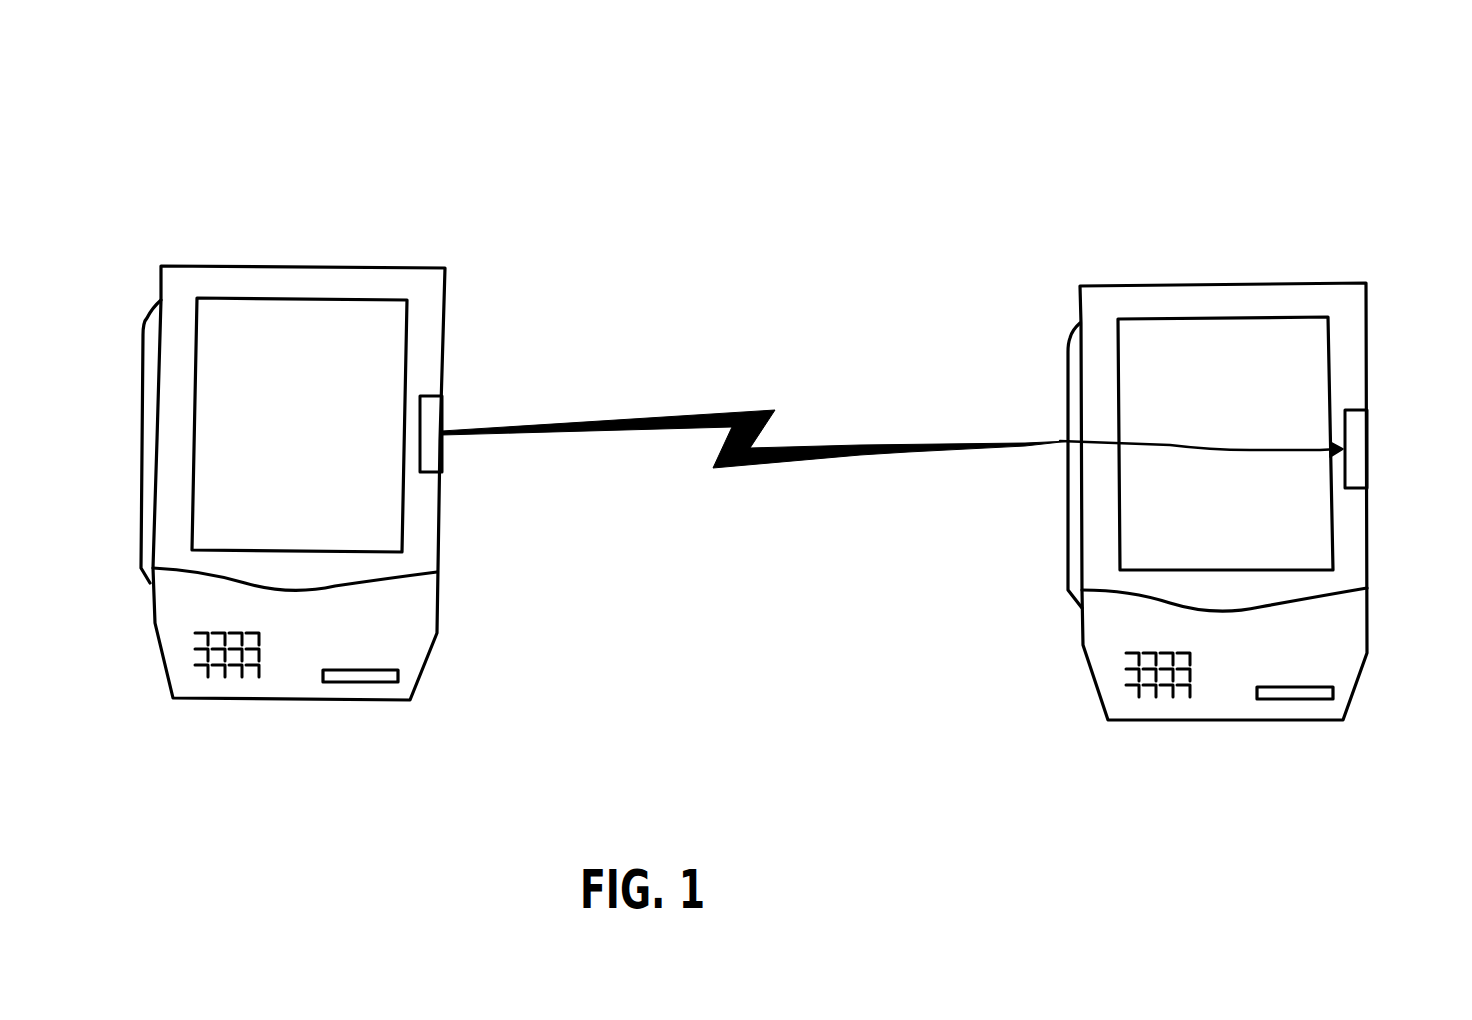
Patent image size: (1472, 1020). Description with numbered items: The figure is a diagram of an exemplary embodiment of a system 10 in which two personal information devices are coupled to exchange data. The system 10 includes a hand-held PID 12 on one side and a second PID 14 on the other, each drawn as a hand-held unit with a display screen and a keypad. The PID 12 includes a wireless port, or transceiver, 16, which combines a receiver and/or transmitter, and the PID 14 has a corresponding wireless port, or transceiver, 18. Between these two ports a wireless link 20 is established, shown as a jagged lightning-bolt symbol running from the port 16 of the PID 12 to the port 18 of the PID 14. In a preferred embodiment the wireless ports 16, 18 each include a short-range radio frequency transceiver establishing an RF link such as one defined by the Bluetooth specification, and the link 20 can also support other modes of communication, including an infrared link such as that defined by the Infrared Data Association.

The system 10 is at (782, 63).
The hand-held PID 12 is at (295, 265).
The PID 14 is at (1215, 282).
The wireless port 16 is at (442, 396).
The wireless port 18 is at (1366, 408).
The wireless link 20 is at (735, 412).